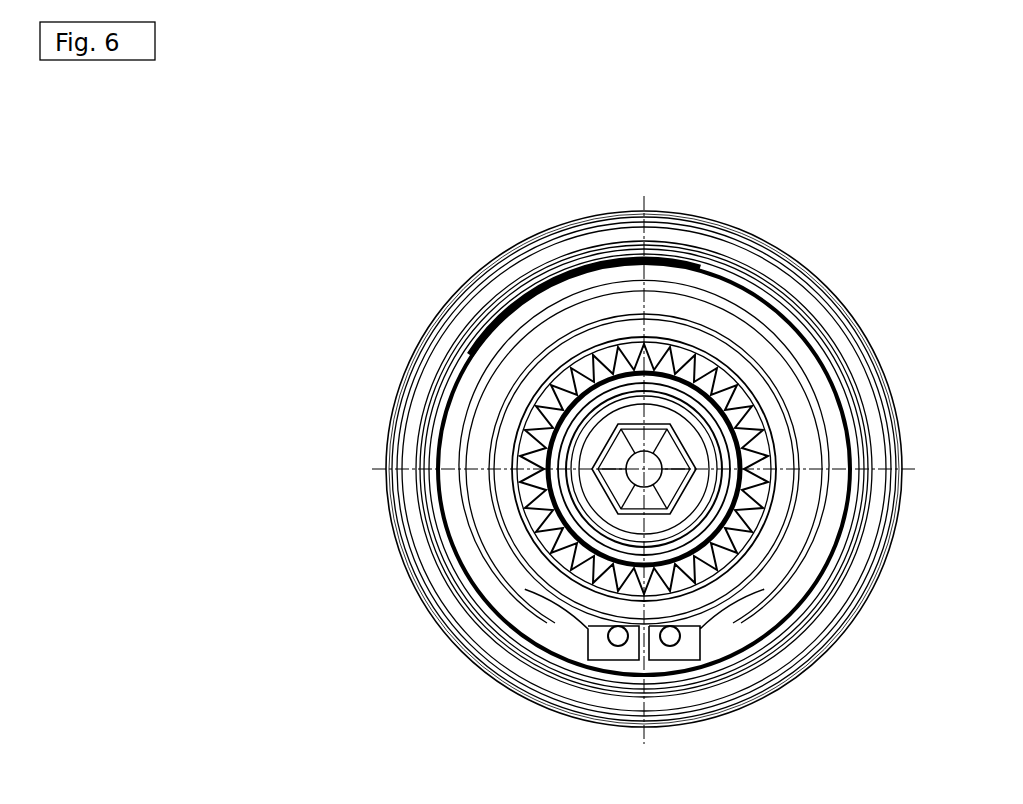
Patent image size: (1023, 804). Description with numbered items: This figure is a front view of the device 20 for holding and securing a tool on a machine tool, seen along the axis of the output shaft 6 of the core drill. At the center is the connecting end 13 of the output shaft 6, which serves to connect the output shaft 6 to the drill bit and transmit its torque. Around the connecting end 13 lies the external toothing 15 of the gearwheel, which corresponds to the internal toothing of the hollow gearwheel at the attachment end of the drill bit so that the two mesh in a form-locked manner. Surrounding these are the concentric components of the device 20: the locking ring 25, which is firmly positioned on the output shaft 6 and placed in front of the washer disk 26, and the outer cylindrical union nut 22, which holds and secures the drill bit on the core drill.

The output shaft 6 is at (904, 598).
The connecting end 13 is at (597, 440).
The external toothing 15 is at (718, 387).
The device 20 is at (538, 198).
The cylindrical union nut 22 is at (877, 385).
The locking ring 25 is at (542, 597).
The washer disk 26 is at (730, 635).